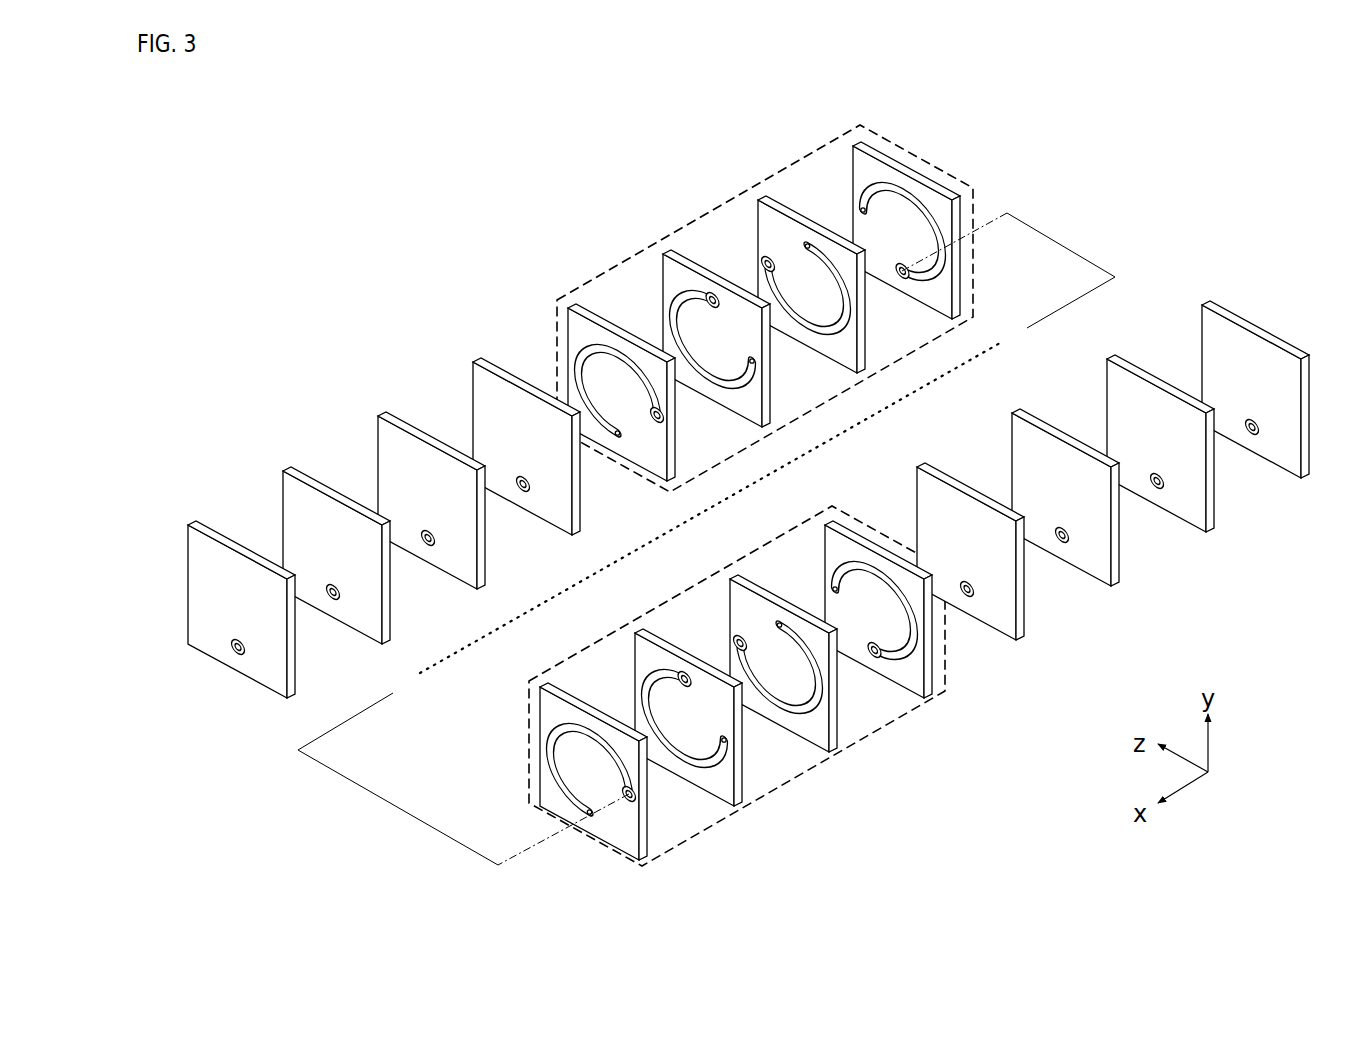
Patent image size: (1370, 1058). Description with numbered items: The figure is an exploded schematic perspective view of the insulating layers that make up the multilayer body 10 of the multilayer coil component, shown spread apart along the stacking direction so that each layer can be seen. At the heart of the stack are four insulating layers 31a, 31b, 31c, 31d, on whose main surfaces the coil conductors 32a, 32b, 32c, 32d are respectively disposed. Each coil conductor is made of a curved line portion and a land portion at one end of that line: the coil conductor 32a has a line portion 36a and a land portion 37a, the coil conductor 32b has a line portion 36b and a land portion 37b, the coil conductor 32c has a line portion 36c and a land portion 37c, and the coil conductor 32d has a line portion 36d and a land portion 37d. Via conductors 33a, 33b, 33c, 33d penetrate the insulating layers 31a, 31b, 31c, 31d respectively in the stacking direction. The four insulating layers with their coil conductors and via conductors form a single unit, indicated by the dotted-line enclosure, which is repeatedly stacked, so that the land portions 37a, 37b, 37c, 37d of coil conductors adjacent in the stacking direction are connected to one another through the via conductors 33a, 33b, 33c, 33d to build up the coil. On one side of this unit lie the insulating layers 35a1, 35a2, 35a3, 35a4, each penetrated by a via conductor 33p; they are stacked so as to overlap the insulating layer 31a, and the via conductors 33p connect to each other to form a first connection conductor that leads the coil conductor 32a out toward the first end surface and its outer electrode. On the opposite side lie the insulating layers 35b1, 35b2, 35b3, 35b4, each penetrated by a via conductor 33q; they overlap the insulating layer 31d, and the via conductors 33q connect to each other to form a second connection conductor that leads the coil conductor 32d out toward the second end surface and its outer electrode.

The multilayer body 10 is at (761, 496).
The insulating layer 31a is at (572, 567).
The insulating layer 31b is at (666, 514).
The insulating layer 31c is at (760, 463).
The insulating layer 31d is at (857, 408).
The coil conductor 32a is at (583, 578).
The coil conductor 32b is at (678, 524).
The coil conductor 32c is at (771, 468).
The coil conductor 32d is at (866, 415).
The via conductor 33a is at (654, 411).
The via conductor 33b is at (710, 300).
The via conductor 33c is at (766, 261).
The via conductor 33d is at (902, 278).
The via conductor 33p is at (241, 654).
The via conductor 33q is at (1256, 434).
The insulating layer 35a1 is at (204, 527).
The insulating layer 35a2 is at (299, 473).
The insulating layer 35a3 is at (394, 418).
The insulating layer 35a4 is at (489, 364).
The insulating layer 35b1 is at (1304, 478).
The insulating layer 35b2 is at (1209, 532).
The insulating layer 35b3 is at (1114, 586).
The insulating layer 35b4 is at (1019, 640).
The line portion 36a is at (568, 577).
The line portion 36b is at (662, 524).
The line portion 36c is at (754, 474).
The line portion 36d is at (850, 393).
The land portion 37a is at (653, 420).
The land portion 37b is at (712, 306).
The land portion 37c is at (807, 250).
The land portion 37d is at (860, 209).